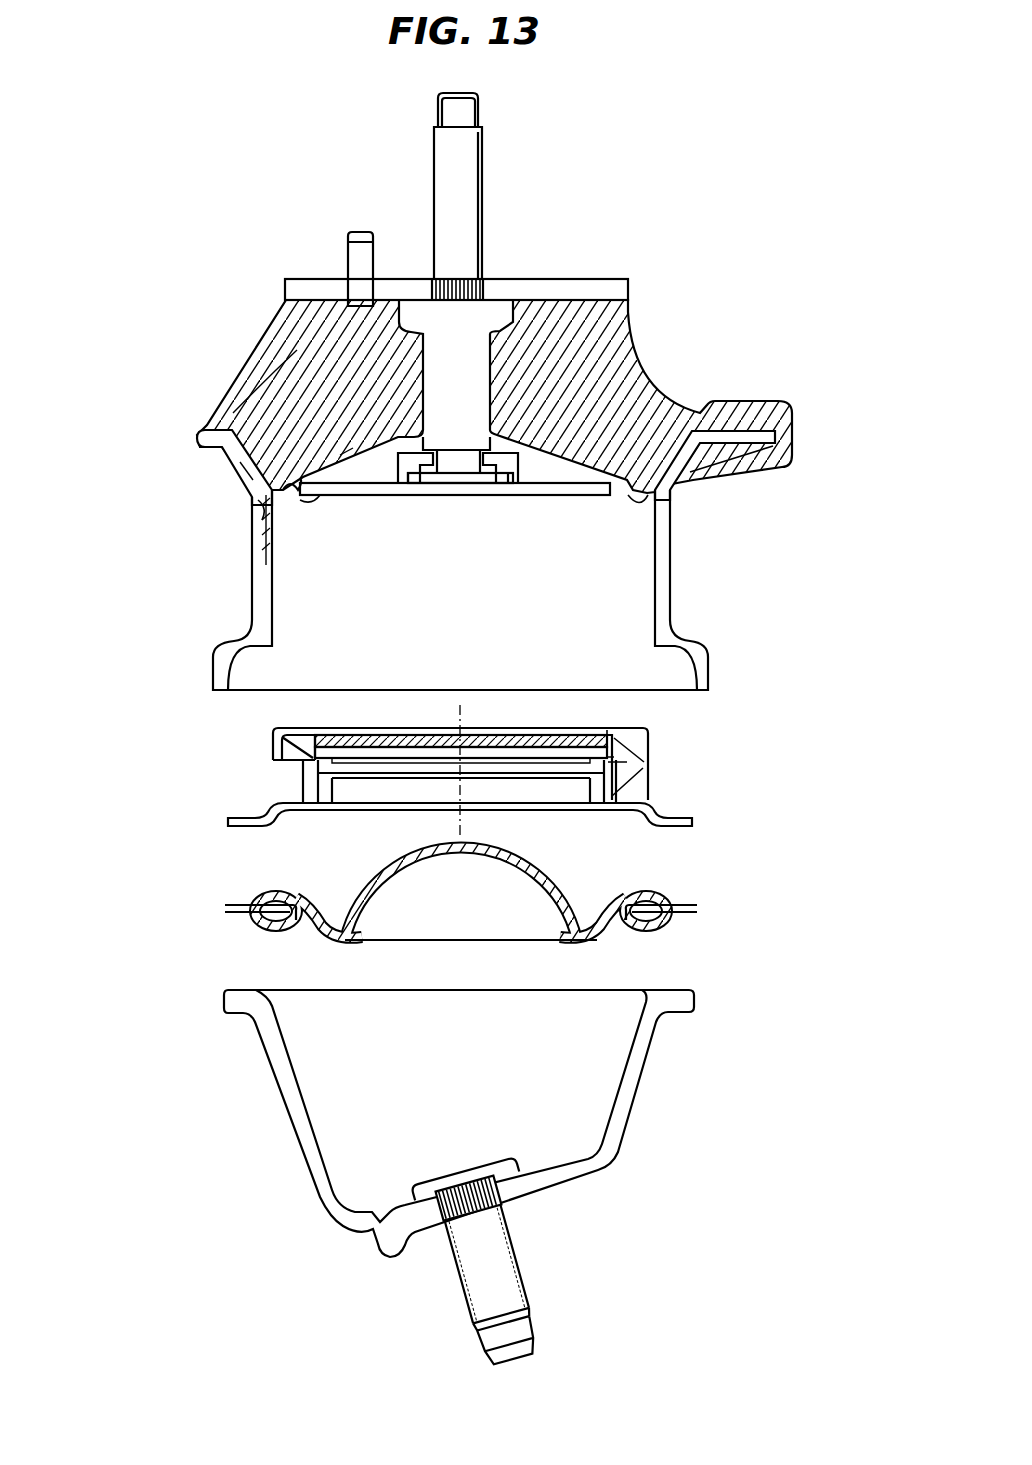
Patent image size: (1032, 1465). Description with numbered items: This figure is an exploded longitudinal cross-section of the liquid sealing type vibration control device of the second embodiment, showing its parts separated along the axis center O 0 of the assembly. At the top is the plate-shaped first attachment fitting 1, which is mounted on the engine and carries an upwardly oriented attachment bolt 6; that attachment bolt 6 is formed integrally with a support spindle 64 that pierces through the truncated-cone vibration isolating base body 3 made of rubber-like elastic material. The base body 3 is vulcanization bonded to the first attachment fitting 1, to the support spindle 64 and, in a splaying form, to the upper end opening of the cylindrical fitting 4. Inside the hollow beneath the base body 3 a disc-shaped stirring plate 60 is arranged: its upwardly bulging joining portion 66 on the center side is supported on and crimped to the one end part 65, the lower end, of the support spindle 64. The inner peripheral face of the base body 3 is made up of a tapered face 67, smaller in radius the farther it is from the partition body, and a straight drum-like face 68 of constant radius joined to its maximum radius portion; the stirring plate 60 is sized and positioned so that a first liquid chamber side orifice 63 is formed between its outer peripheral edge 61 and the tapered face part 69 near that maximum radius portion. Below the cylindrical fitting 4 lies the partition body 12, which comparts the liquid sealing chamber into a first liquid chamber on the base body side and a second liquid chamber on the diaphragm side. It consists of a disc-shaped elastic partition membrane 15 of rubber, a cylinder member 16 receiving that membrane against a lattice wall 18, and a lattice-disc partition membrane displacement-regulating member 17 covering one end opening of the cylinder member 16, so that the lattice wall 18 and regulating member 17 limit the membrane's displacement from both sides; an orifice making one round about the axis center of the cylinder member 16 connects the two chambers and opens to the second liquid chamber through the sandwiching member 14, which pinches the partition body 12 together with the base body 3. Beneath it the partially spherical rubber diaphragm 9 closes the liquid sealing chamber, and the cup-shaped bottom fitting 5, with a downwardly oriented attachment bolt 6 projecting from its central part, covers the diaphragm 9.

The first attachment fitting 1 is at (527, 296).
The vibration isolating base body 3 is at (300, 350).
The cylindrical fitting 4 is at (678, 548).
The bottom fitting 5 is at (640, 1062).
The attachment bolt 6 is at (445, 156).
The diaphragm 9 is at (545, 877).
The partition body 12 is at (468, 780).
The sandwiching member 14 is at (663, 822).
The elastic partition membrane 15 is at (418, 742).
The cylinder member 16 is at (645, 768).
The partition membrane displacement-regulating member 17 is at (273, 748).
The lattice wall 18 is at (377, 758).
The stirring plate 60 is at (570, 487).
The outer peripheral edge 61 is at (300, 497).
The first liquid chamber side orifice 63 is at (257, 518).
The support spindle 64 is at (472, 378).
The one end part 65 is at (448, 462).
The joining portion 66 is at (395, 480).
The tapered face 67 is at (353, 457).
The straight drum-like face 68 is at (253, 490).
The tapered face part 69 is at (283, 492).
The reference 0 is at (465, 674).